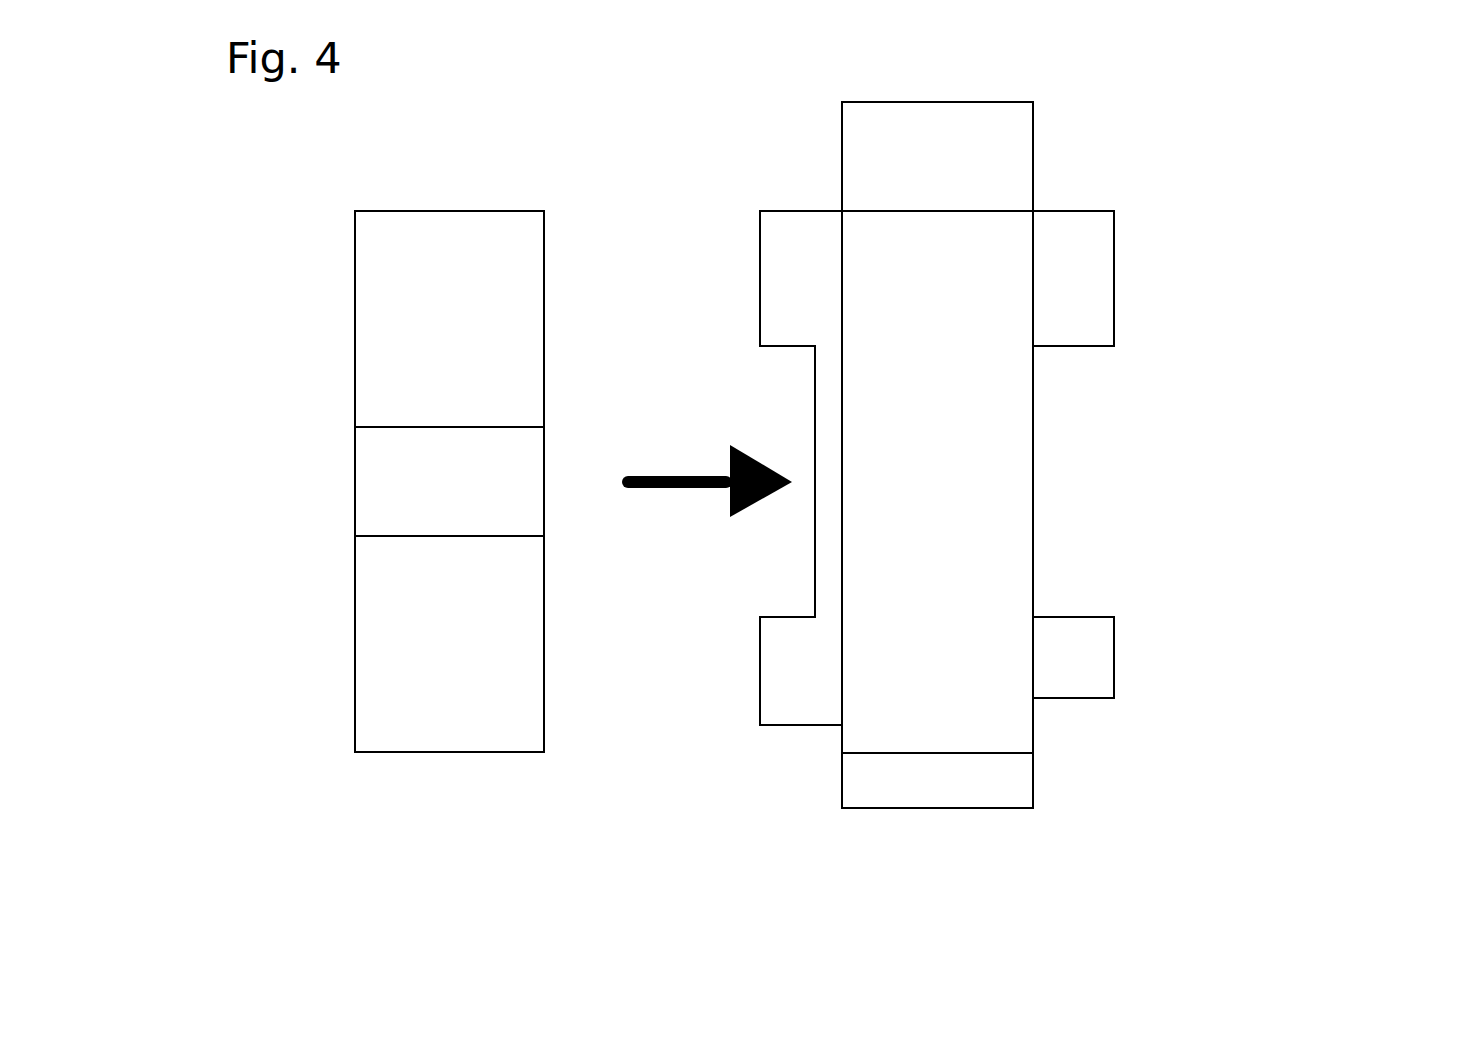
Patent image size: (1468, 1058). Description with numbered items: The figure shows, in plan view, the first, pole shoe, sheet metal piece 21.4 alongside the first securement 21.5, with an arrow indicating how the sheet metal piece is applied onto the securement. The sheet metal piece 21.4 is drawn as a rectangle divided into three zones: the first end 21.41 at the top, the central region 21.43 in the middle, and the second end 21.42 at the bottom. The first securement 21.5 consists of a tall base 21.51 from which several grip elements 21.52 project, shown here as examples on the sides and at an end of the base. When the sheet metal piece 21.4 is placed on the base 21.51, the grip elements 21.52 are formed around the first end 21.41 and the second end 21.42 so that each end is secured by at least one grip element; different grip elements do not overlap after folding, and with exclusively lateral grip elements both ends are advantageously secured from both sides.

The first, pole shoe, sheet metal piece 21.4 is at (313, 481).
The first end 21.41 is at (437, 373).
The central region 21.43 is at (437, 483).
The second end 21.42 is at (437, 672).
The first securement 21.5 is at (1028, 457).
The base 21.51 is at (1005, 428).
The grip elements 21.52 is at (978, 156).